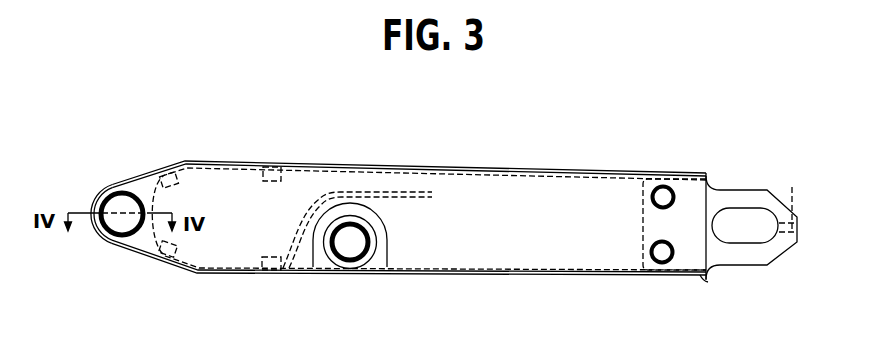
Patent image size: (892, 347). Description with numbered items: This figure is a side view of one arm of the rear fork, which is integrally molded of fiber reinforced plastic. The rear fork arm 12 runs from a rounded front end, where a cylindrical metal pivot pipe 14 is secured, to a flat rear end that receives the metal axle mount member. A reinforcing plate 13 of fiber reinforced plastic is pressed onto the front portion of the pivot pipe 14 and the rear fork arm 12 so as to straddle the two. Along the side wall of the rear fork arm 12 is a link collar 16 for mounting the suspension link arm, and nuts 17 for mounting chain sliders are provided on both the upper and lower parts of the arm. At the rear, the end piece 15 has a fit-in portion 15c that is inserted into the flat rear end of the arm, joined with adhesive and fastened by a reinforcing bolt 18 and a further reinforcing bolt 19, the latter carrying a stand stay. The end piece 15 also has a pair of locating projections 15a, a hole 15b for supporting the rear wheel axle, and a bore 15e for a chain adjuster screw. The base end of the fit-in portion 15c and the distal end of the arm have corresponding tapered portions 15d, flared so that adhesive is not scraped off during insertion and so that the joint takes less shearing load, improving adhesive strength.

The rear fork arm 12 is at (507, 188).
The reinforcing plate 13 is at (113, 182).
The pivot pipe 14 is at (98, 235).
The end piece 15 is at (742, 190).
The locating projections 15a is at (708, 173).
The hole 15b is at (768, 236).
The fit-in portion 15c is at (678, 258).
The tapered portions 15d is at (708, 282).
The bore 15e is at (792, 190).
The link collar 16 is at (380, 252).
The nuts 17 is at (167, 171).
The reinforcing bolt 18 is at (664, 186).
The reinforcing bolt 19 is at (652, 259).